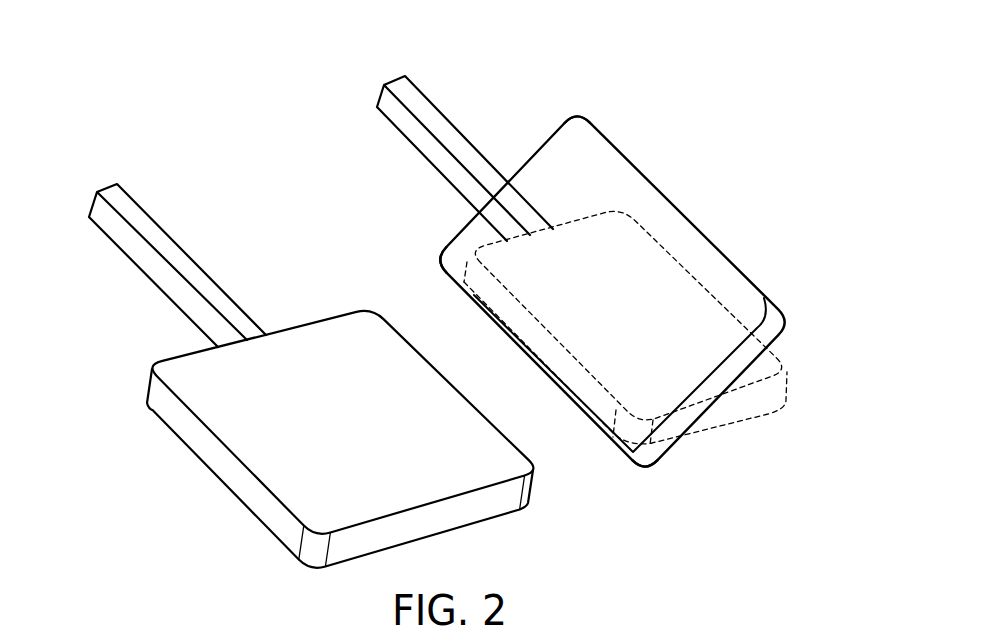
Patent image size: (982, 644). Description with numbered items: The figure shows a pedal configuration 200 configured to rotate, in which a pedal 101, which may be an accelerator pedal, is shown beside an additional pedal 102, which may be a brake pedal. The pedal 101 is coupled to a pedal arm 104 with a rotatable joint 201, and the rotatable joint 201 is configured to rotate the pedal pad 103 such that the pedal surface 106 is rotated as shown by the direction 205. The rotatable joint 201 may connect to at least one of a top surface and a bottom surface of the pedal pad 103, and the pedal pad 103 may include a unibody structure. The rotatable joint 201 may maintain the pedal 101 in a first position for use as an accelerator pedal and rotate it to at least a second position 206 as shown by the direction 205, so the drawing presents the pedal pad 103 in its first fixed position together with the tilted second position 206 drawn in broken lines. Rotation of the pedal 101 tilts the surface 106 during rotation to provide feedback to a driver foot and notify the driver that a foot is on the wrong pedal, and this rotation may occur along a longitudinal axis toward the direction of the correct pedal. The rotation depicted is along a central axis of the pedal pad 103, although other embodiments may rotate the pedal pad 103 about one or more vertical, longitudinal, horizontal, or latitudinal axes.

The pedal configuration 200 is at (123, 102).
The pedal 101 is at (588, 122).
The pedal 102 is at (296, 323).
The pedal pad 103 is at (747, 418).
The pedal arm 104 is at (427, 97).
The pedal surface 106 is at (645, 248).
The rotatable joint 201 is at (453, 233).
The direction 205 is at (860, 363).
The second position 206 is at (668, 456).